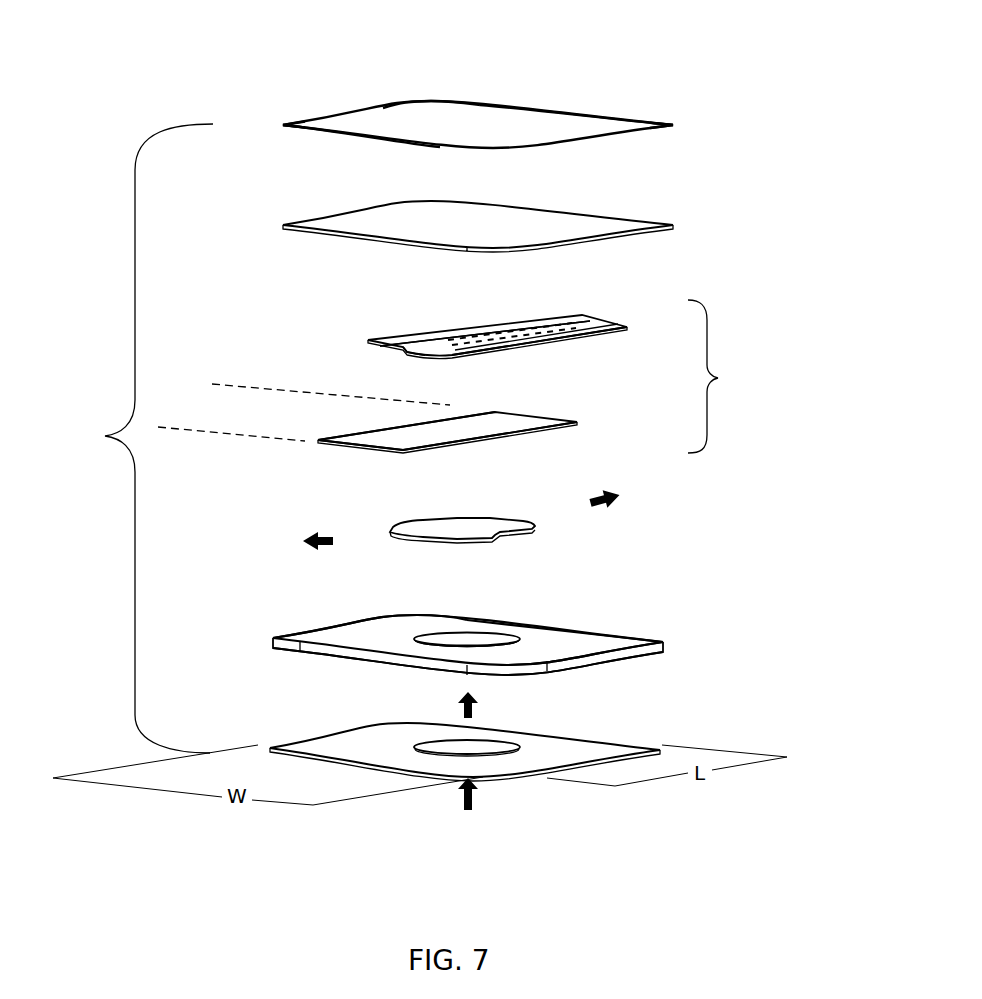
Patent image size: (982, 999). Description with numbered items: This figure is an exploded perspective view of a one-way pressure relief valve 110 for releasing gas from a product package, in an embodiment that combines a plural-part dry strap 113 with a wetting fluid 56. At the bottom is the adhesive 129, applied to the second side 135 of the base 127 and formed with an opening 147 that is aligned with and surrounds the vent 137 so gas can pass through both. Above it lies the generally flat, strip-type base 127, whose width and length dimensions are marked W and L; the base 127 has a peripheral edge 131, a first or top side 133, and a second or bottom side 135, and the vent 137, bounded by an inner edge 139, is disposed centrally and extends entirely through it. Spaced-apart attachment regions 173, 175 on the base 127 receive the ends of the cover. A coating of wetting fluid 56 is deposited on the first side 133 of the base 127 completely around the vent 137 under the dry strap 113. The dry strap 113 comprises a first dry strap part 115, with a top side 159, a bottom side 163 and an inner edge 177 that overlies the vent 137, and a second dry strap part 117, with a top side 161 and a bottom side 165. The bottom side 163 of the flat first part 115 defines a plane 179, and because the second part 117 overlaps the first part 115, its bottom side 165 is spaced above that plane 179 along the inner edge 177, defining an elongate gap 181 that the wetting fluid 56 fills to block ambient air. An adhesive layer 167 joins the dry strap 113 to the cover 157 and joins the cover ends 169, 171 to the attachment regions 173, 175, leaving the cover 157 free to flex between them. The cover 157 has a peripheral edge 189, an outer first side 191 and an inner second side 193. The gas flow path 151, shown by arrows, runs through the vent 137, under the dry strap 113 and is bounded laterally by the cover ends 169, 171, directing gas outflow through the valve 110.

The one-way pressure relief valve 110 is at (103, 436).
The plural-part dry strap 113 is at (732, 376).
The cover 157 is at (366, 113).
The first side of cover 191 is at (453, 113).
The peripheral edge of cover 189 is at (538, 102).
The cover end 169 is at (308, 133).
The second side of cover 193 is at (390, 142).
The cover end 171 is at (603, 140).
The adhesive layer 167 is at (563, 230).
The second dry strap part 117 is at (543, 315).
The first side of second dry strap part 161 is at (452, 332).
The second side of second dry strap part 165 is at (592, 337).
The elongate gap 181 is at (388, 345).
The plane 179 is at (231, 414).
The first side of first dry strap part 159 is at (507, 420).
The first dry strap part 115 is at (405, 433).
The second side of first dry strap part 163 is at (368, 447).
The inner edge of first dry strap part 177 is at (462, 443).
The wetting fluid 56 is at (447, 527).
The gas flow path 151 is at (293, 541).
The peripheral edge of base 131 is at (652, 652).
The vent 137 is at (477, 626).
The inner edge of base 139 is at (507, 640).
The attachment region of base 173 is at (372, 630).
The first side of base 133 is at (570, 640).
The attachment region of base 175 is at (602, 638).
The second side of base 135 is at (610, 662).
The base 127 is at (358, 657).
The adhesive 129 is at (373, 740).
The opening in adhesive 147 is at (477, 760).